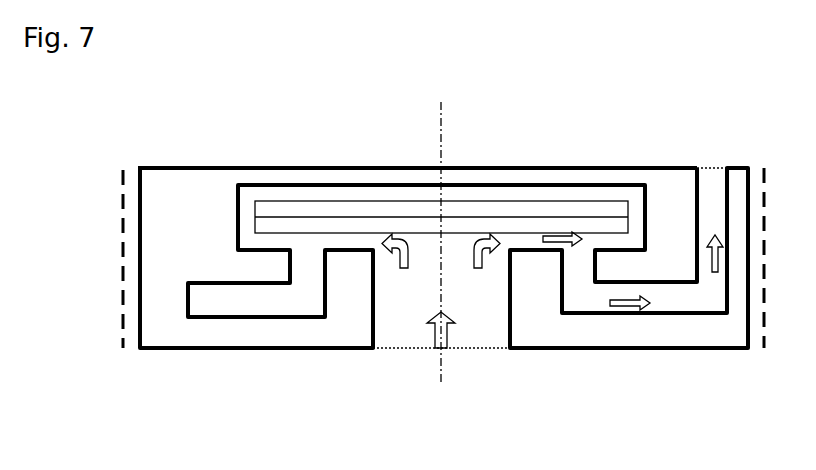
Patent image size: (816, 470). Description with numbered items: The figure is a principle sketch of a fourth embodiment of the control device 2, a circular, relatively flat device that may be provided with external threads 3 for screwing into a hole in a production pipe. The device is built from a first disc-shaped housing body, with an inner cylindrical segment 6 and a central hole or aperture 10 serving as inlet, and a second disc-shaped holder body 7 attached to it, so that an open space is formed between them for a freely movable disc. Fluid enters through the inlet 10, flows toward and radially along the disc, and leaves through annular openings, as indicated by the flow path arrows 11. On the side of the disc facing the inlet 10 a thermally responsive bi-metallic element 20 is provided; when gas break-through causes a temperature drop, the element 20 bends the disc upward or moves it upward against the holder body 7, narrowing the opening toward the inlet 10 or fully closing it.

The control device 2 is at (223, 362).
The external threads 3 is at (762, 172).
The inner cylindrical segment 6 is at (527, 297).
The second disc-shaped holder body 7 is at (307, 167).
The central hole or aperture (inlet) 10 is at (408, 282).
The flow path arrows 11 is at (442, 348).
The bi-metallic element 20 is at (357, 227).